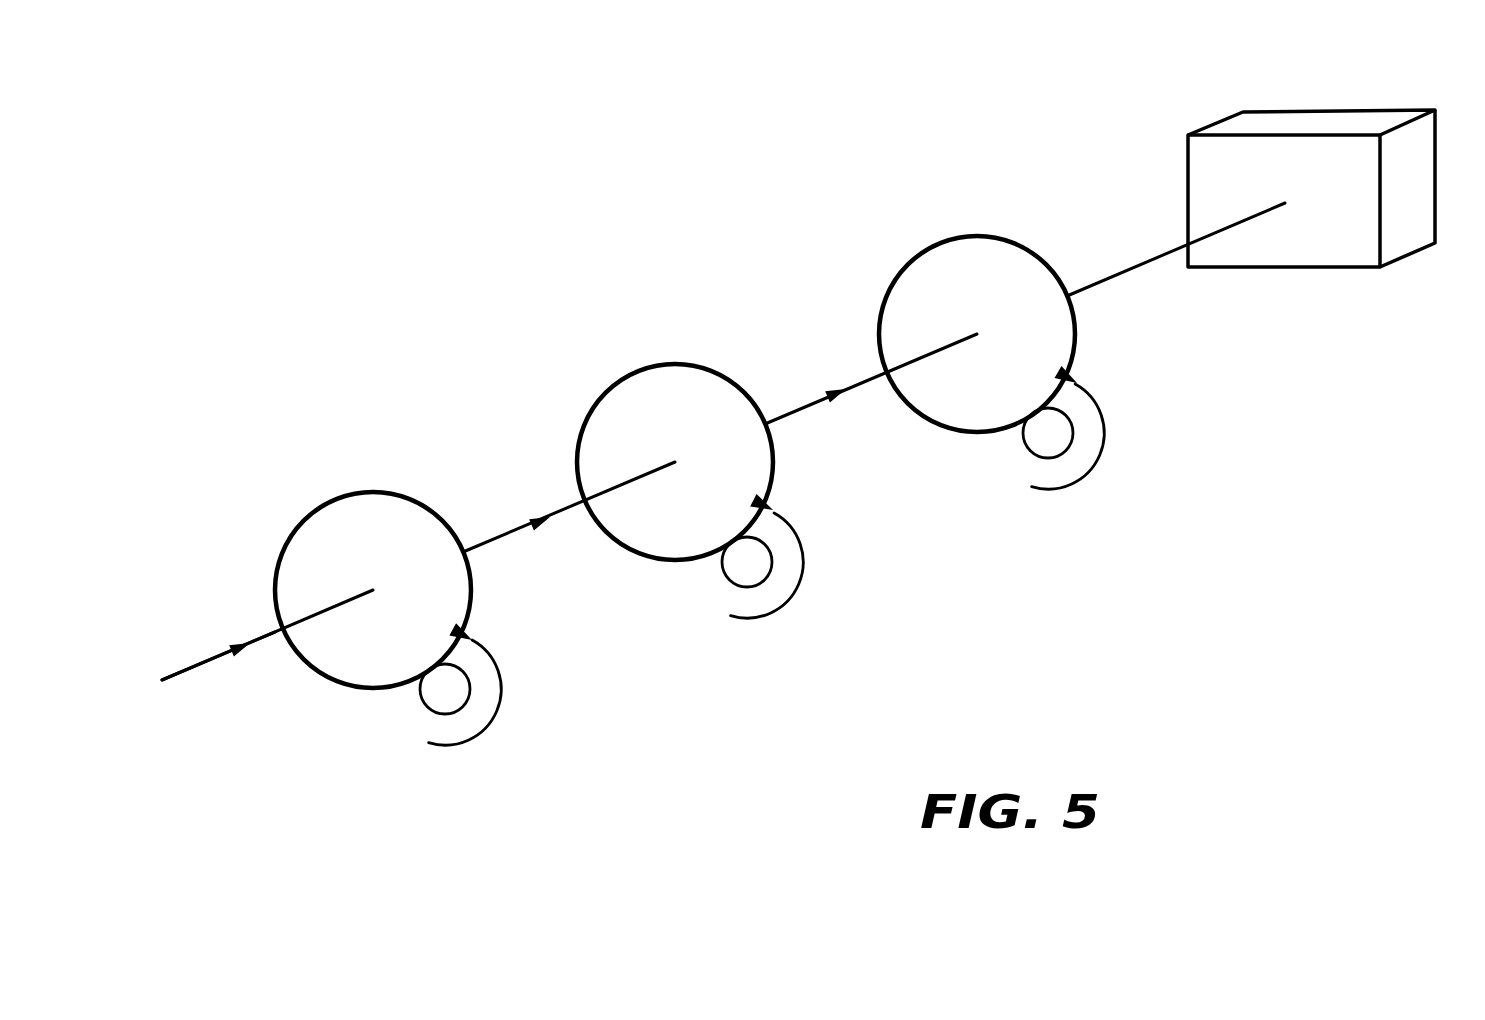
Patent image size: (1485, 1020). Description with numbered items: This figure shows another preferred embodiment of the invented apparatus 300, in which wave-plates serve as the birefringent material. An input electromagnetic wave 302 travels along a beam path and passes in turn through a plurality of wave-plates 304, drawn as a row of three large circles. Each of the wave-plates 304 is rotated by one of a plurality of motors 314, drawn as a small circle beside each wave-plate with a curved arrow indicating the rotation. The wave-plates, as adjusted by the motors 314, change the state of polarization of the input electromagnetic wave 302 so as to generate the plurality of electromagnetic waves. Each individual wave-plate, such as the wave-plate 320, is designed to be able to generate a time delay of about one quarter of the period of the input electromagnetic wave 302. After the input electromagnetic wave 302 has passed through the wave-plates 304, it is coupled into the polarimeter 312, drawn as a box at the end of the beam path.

The calibration optical system 300 is at (483, 280).
The input electromagnetic wave 302 is at (186, 670).
The wave-plates 304 is at (618, 297).
The polarimeter 312 is at (1222, 127).
The motors 314 is at (722, 587).
The wave-plate 320 is at (325, 527).